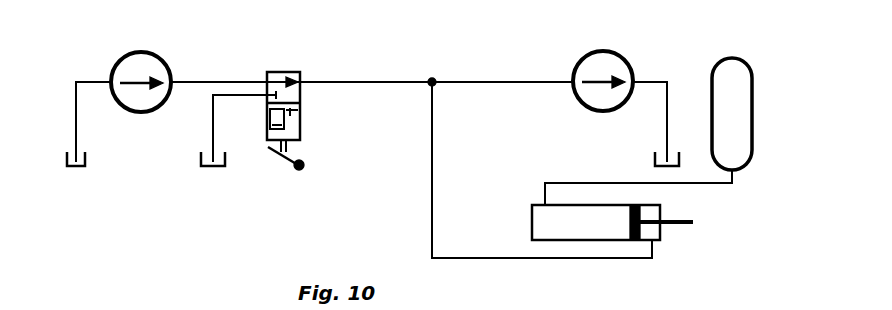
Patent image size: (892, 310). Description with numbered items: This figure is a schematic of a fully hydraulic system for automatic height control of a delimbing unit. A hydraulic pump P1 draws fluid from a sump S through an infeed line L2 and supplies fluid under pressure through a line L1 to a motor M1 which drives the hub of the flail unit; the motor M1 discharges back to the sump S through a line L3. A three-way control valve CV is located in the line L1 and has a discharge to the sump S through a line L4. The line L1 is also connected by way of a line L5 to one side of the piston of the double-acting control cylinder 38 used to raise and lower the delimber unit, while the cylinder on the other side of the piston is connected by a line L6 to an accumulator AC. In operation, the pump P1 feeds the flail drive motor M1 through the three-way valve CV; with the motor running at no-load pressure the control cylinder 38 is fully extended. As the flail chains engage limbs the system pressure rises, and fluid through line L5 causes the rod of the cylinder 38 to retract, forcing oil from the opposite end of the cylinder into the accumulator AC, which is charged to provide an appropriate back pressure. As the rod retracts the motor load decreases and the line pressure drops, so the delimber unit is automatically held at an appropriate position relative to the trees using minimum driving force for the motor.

The hydraulic pump P1 is at (168, 72).
The infeed line L2 is at (90, 80).
The sump S is at (85, 158).
The discharge line L4 is at (243, 96).
The three-way control valve CV is at (300, 75).
The pressure line L1 is at (368, 80).
The cylinder line L5 is at (433, 143).
The motor M1 is at (632, 70).
The motor discharge line L3 is at (666, 122).
The accumulator AC is at (748, 52).
The accumulator line L6 is at (704, 185).
The control cylinder 38 is at (532, 219).